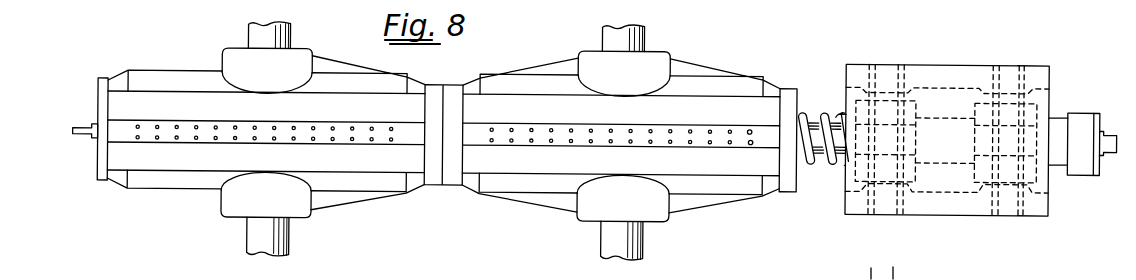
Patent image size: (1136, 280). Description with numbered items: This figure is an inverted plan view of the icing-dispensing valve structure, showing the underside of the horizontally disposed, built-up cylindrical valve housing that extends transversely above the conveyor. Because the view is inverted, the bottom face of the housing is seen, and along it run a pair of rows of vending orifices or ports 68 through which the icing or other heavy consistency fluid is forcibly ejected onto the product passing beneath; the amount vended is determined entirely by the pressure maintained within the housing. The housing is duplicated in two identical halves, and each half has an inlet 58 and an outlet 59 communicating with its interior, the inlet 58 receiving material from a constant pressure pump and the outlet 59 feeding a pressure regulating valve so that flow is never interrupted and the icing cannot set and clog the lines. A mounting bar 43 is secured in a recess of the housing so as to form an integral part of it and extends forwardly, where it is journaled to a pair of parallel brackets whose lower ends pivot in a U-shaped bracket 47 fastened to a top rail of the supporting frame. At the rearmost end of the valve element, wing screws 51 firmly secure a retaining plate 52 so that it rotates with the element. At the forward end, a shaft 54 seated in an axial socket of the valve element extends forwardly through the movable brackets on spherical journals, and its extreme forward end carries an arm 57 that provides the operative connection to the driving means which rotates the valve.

The mounting bar 43 is at (644, 273).
The U-shaped bracket 47 is at (1052, 75).
The wing screws 51 is at (92, 128).
The retaining plate 52 is at (102, 79).
The shaft 54 is at (813, 119).
The arm 57 is at (1086, 110).
The inlet 58 is at (284, 61).
The outlet 59 is at (290, 209).
The vending orifices or ports 68 is at (382, 153).